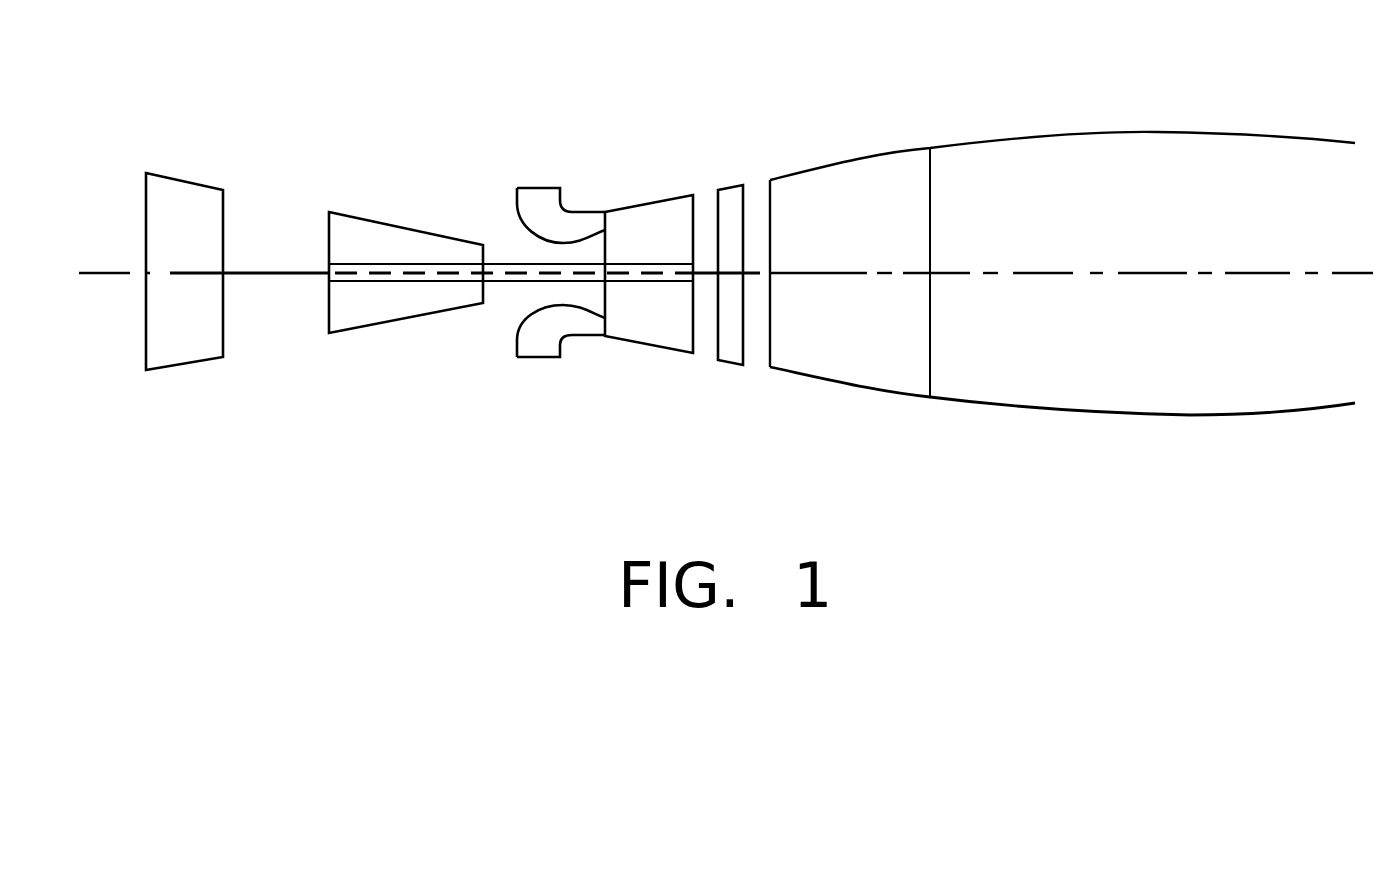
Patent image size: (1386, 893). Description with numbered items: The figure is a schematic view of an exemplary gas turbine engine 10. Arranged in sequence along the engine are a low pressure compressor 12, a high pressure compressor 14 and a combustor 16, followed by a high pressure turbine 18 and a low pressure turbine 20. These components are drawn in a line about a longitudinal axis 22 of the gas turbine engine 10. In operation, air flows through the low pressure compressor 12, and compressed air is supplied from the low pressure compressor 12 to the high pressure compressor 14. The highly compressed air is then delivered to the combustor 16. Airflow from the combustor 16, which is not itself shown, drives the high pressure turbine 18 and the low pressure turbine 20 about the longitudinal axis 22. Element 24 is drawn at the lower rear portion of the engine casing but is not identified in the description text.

The gas turbine engine 10 is at (946, 84).
The low pressure compressor 12 is at (205, 360).
The high pressure compressor 14 is at (428, 320).
The combustor 16 is at (538, 345).
The high pressure turbine 18 is at (667, 350).
The low pressure turbine 20 is at (728, 362).
The longitudinal axis 22 is at (1040, 275).
The nacelle / casing 24 is at (1065, 412).